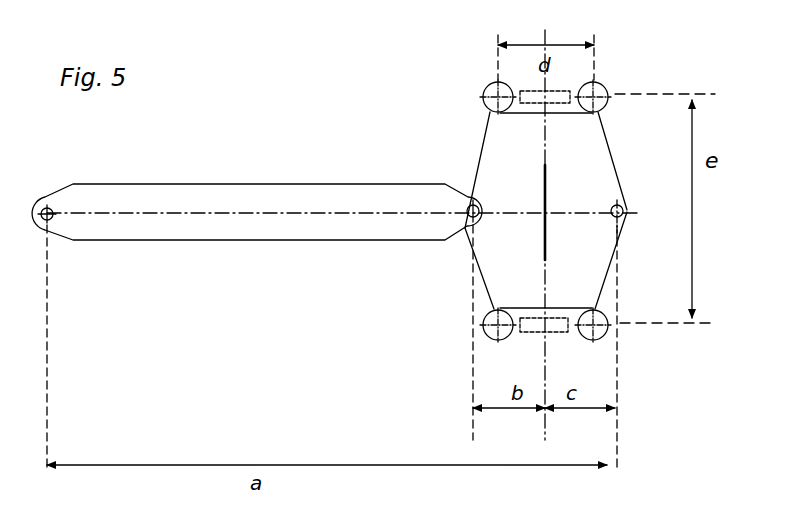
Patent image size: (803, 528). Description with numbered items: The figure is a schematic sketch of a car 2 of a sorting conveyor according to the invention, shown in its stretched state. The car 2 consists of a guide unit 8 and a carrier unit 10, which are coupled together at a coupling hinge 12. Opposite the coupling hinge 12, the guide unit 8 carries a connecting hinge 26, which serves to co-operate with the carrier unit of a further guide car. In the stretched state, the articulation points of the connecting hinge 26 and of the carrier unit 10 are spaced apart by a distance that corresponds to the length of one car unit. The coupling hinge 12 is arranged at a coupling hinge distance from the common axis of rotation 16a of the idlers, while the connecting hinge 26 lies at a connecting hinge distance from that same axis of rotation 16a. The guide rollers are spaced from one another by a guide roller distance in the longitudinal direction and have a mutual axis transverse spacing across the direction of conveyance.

The car 2 is at (340, 345).
The guide unit 8 is at (600, 248).
The carrier unit 10 is at (233, 232).
The coupling hinge 12 is at (468, 222).
The common axis of rotation 16a is at (545, 150).
The connecting hinge 26 is at (617, 208).